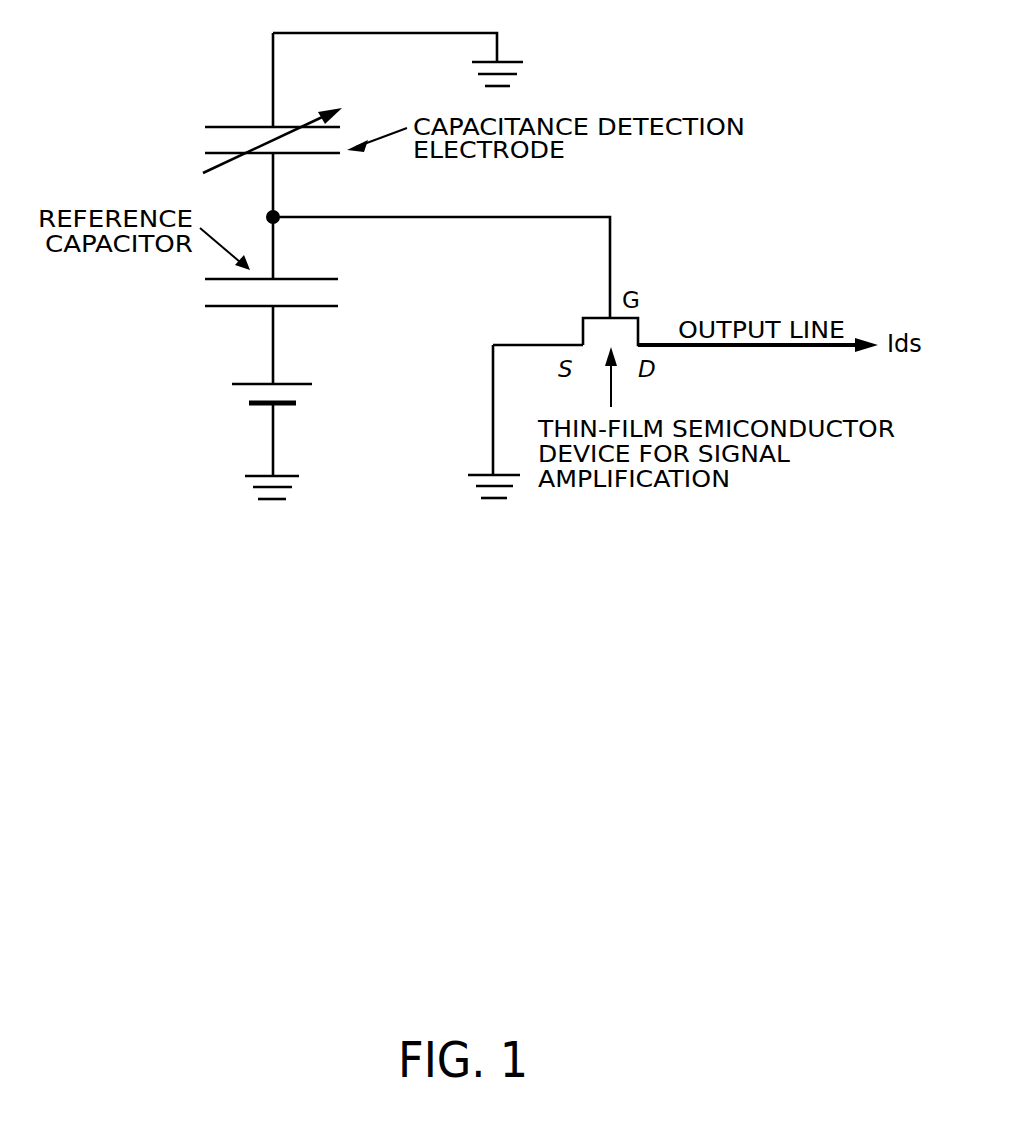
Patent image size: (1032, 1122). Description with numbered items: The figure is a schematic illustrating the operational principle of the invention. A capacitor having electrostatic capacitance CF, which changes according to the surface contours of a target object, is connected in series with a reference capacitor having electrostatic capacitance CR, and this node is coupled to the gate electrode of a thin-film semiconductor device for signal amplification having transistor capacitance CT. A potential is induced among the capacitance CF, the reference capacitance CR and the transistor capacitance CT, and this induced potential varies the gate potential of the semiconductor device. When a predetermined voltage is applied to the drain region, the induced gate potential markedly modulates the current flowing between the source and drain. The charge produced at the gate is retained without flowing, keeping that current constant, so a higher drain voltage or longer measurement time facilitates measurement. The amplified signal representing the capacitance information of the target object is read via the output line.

The electrostatic capacitance of the capacitance detection electrode capacitor CF is at (254, 140).
The electrostatic capacitance of the reference capacitor CR is at (251, 294).
The transistor capacitance of the thin-film semiconductor device CT is at (592, 330).